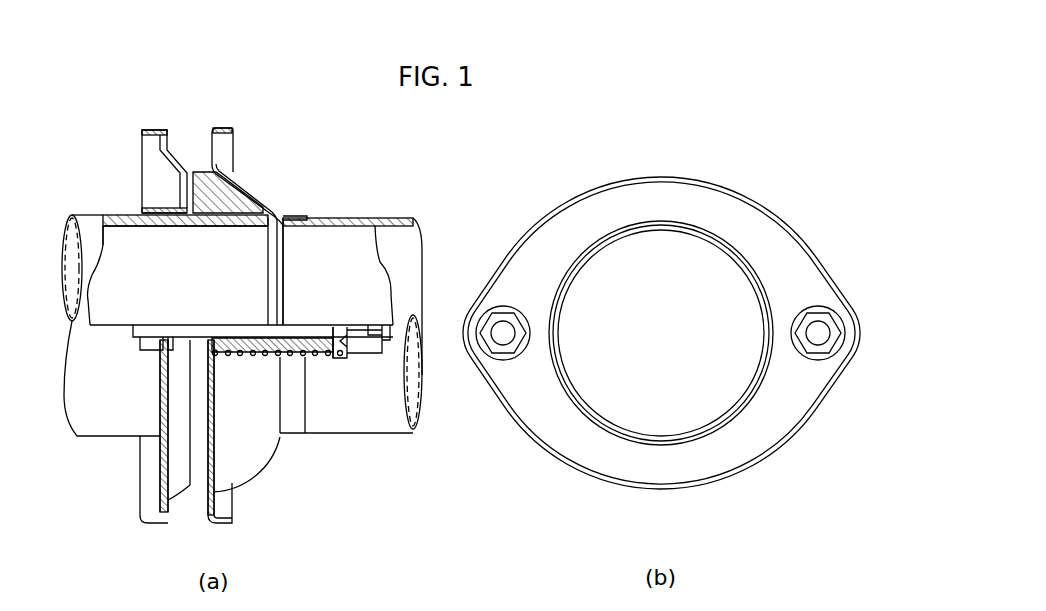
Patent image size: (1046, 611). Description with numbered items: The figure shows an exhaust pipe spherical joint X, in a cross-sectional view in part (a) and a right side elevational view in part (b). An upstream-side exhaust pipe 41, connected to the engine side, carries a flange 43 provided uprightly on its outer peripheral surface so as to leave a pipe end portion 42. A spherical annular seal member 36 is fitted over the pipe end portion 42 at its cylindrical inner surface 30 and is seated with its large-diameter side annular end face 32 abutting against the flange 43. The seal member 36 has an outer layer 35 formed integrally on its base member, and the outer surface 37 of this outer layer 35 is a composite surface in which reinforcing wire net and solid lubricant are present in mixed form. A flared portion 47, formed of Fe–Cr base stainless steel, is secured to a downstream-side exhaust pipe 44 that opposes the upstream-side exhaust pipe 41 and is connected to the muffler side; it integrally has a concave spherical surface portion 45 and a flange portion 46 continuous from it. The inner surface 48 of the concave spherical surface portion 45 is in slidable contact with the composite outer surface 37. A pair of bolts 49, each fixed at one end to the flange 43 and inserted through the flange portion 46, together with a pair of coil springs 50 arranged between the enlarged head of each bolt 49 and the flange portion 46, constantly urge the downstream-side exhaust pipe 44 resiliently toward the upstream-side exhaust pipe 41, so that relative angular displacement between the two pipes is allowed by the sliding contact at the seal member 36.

The cylindrical inner surface 30 is at (194, 222).
The large-diameter side annular end face 32 is at (187, 190).
The outer layer 35 is at (264, 190).
The spherical annular seal member 36 is at (201, 180).
The outer surface 37 is at (260, 182).
The upstream-side exhaust pipe 41 is at (88, 425).
The pipe end portion 42 is at (238, 222).
The flange 43 is at (152, 130).
The downstream-side exhaust pipe 44 is at (405, 252).
The concave spherical surface portion 45 is at (284, 211).
The flange portion 46 is at (221, 505).
The flared portion 47 is at (243, 452).
The inner surface 48 is at (236, 180).
The bolt 49 is at (322, 335).
The coil spring 50 is at (288, 357).
The exhaust pipe spherical joint X is at (348, 182).